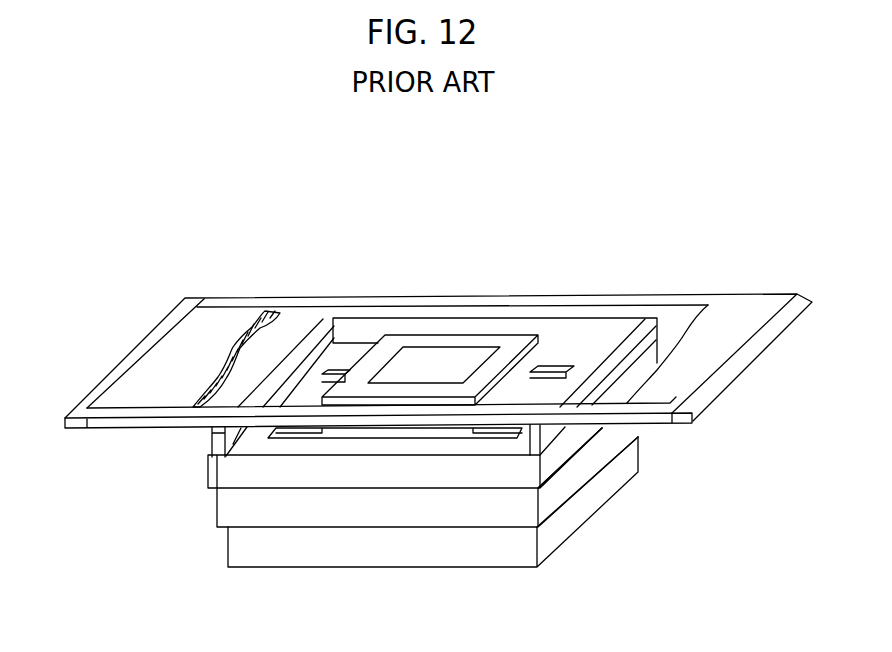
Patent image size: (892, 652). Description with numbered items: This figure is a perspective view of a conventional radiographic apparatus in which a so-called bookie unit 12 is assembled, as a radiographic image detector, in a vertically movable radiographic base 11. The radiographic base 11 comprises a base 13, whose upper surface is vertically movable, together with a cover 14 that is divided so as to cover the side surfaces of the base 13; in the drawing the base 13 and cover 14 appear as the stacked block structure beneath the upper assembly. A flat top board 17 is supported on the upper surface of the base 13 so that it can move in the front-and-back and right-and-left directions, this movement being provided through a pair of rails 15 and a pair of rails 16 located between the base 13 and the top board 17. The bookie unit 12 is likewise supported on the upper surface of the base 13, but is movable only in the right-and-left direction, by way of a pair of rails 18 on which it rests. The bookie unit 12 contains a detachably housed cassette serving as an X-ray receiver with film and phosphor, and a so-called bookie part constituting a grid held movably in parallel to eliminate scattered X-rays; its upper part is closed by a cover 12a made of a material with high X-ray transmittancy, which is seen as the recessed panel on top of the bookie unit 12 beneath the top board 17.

The radiographic base 11 is at (609, 511).
The bookie unit 12 is at (439, 327).
The cover 12a is at (458, 357).
The base 13 is at (218, 510).
The cover 14 is at (388, 513).
The pair of rails 15 is at (212, 449).
The pair of rails 16 is at (210, 433).
The top board 17 is at (220, 328).
The pair of rails 18 is at (556, 372).